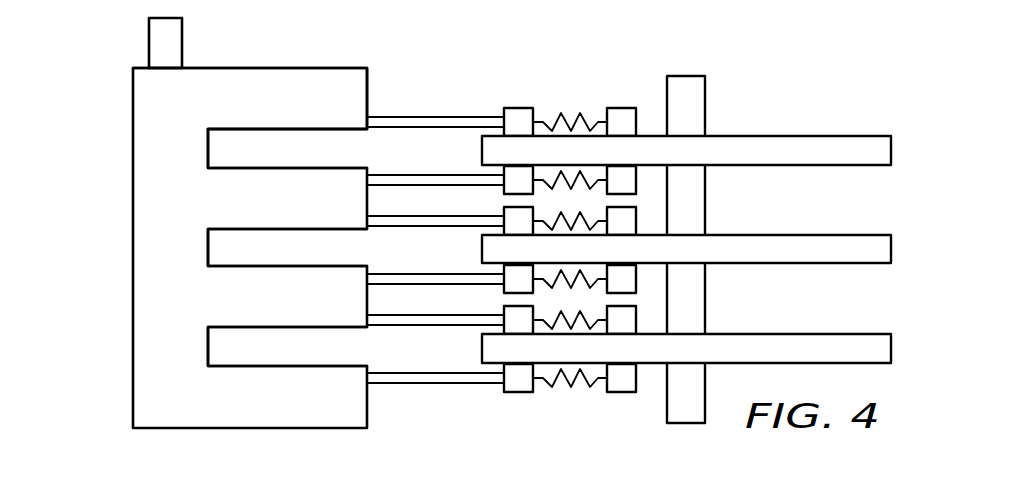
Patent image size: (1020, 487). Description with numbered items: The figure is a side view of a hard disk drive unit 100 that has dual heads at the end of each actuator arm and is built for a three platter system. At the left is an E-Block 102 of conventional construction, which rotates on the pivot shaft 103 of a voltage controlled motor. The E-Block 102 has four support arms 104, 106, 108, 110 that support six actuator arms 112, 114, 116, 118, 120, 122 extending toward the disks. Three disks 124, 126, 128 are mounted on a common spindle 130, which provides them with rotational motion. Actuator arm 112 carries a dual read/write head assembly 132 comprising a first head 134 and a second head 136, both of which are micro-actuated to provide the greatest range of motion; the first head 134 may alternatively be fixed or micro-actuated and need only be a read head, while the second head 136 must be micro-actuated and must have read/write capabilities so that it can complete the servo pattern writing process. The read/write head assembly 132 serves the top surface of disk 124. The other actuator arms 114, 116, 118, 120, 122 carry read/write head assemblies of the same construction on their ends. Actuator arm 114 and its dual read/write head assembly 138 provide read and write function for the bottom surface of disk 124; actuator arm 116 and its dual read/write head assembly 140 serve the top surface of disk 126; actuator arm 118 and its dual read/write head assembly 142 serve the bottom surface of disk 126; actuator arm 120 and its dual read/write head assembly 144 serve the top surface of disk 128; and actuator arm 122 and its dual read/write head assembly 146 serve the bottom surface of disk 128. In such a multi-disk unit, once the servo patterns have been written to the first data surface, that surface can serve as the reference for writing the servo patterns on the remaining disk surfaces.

The hard disk drive unit 100 is at (79, 324).
The E-Block 102 is at (143, 175).
The pivot shaft 103 is at (148, 42).
The support arm 104 is at (283, 80).
The support arm 106 is at (317, 173).
The support arm 108 is at (317, 273).
The support arm 110 is at (317, 373).
The actuator arm 112 is at (432, 116).
The actuator arm 114 is at (460, 172).
The actuator arm 116 is at (473, 228).
The actuator arm 118 is at (398, 271).
The actuator arm 120 is at (462, 326).
The actuator arm 122 is at (432, 383).
The disk 124 is at (815, 135).
The disk 126 is at (815, 235).
The disk 128 is at (815, 333).
The common spindle 130 is at (707, 107).
The dual read/write head assembly 132 is at (562, 87).
The first head 134 is at (515, 107).
The second head 136 is at (623, 107).
The dual read/write head assembly 138 is at (488, 193).
The dual read/write head assembly 140 is at (656, 218).
The dual read/write head assembly 142 is at (488, 293).
The dual read/write head assembly 144 is at (656, 316).
The dual read/write head assembly 146 is at (561, 409).